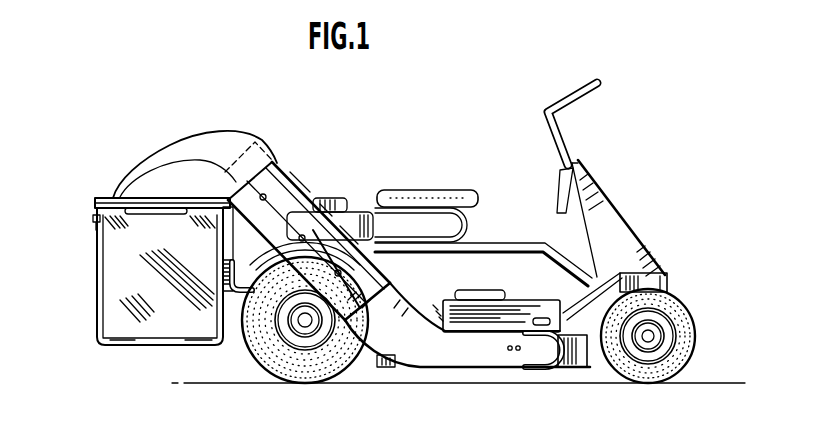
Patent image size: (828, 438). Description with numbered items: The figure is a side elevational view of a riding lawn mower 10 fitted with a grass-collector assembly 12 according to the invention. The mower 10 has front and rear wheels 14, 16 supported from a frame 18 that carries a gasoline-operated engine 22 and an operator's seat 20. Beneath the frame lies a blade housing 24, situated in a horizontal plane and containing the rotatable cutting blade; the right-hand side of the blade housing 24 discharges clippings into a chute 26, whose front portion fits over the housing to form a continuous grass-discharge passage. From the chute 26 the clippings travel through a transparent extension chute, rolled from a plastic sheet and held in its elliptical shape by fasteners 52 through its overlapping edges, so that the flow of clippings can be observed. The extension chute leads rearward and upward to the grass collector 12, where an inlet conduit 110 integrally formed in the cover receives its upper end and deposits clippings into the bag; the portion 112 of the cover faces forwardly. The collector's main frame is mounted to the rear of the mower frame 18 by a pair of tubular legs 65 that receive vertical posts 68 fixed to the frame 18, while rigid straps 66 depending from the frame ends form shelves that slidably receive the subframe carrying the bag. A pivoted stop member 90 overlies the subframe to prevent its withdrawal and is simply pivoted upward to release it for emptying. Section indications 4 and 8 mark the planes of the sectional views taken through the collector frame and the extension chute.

The riding lawn mower 10 is at (604, 179).
The grass-collector assembly 12 is at (93, 203).
The front wheel 14 is at (696, 335).
The rear wheel 16 is at (253, 360).
The frame 18 is at (528, 242).
The operator's seat 20 is at (447, 198).
The gasoline-operated engine 22 is at (354, 211).
The blade housing 24 is at (567, 368).
The chute 26 is at (443, 349).
The fasteners 52 is at (268, 193).
The tubular legs 65 is at (223, 233).
The rigid straps 66 is at (128, 214).
The vertical posts 68 is at (230, 262).
The stop member 90 is at (93, 220).
The inlet conduit 110 is at (233, 133).
The forward-facing portion of cover 112 is at (273, 163).
The section line 4- 4 is at (163, 140).
The section line 8- 8 is at (386, 262).